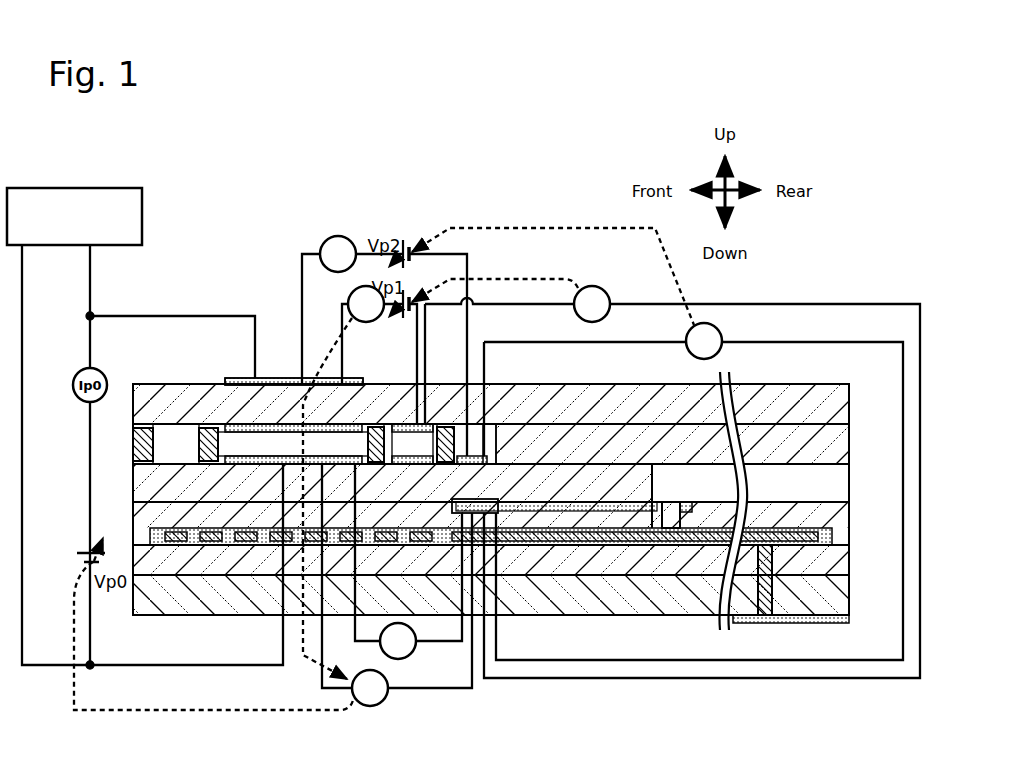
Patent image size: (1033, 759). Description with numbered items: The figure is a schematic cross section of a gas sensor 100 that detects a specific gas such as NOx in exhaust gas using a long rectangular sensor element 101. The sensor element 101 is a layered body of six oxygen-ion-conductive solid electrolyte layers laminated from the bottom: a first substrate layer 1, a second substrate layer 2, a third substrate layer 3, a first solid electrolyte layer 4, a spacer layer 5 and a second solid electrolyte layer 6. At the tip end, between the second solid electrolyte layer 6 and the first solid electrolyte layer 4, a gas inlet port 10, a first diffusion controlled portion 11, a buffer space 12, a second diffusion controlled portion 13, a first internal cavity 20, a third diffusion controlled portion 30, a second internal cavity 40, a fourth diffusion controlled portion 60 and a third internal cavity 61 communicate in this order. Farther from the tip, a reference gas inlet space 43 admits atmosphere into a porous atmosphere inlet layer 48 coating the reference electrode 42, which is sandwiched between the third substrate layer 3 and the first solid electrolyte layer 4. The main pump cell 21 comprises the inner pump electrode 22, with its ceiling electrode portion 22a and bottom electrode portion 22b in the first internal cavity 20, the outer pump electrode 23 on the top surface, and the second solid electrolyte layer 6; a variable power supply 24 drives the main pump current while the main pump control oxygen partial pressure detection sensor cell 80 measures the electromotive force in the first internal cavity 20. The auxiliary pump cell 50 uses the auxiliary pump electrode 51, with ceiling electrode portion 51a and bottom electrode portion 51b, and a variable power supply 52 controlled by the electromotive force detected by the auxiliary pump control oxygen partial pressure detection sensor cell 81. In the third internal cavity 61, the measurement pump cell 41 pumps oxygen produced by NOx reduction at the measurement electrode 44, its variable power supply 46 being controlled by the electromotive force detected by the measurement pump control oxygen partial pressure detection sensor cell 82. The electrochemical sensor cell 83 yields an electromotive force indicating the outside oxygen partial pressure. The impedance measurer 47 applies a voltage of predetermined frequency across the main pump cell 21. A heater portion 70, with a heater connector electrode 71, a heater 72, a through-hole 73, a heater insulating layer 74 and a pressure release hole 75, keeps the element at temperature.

The first substrate layer 1 is at (851, 595).
The second substrate layer 2 is at (851, 565).
The third substrate layer 3 is at (136, 519).
The first solid electrolyte layer 4 is at (136, 482).
The spacer layer 5 is at (851, 432).
The second solid electrolyte layer 6 is at (851, 405).
The gas inlet port 10 is at (133, 428).
The first diffusion controlled portion 11 is at (143, 428).
The buffer space 12 is at (163, 440).
The second diffusion controlled portion 13 is at (208, 428).
The first internal cavity 20 is at (330, 440).
The main pump cell 21 is at (172, 313).
The inner pump electrode 22 is at (283, 378).
The ceiling electrode portion 22a is at (318, 424).
The bottom electrode portion 22b is at (280, 458).
The outer pump electrode 23 is at (241, 378).
The variable power supply 24 is at (78, 558).
The third diffusion controlled portion 30 is at (379, 430).
The second internal cavity 40 is at (394, 420).
The measurement pump cell 41 is at (333, 237).
The reference electrode 42 is at (497, 500).
The reference gas inlet space 43 is at (844, 494).
The measurement electrode 44 is at (475, 464).
The variable power supply 46 is at (405, 243).
The impedance measurer 47 is at (145, 218).
The atmosphere inlet layer 48 is at (655, 500).
The auxiliary pump cell 50 is at (349, 296).
The auxiliary pump electrode 51 is at (395, 445).
The ceiling electrode portion 51a is at (421, 424).
The bottom electrode portion 51b is at (410, 464).
The variable power supply 52 is at (407, 315).
The fourth diffusion controlled portion 60 is at (447, 428).
The third internal cavity 61 is at (488, 447).
The heater portion 70 is at (562, 548).
The heater connector electrode 71 is at (853, 620).
The heater 72 is at (240, 546).
The through-hole 73 is at (775, 612).
The heater insulating layer 74 is at (160, 546).
The pressure release hole 75 is at (672, 502).
The main pump control oxygen partial pressure detection sensor cell 80 is at (394, 700).
The auxiliary pump control oxygen partial pressure detection sensor cell 81 is at (761, 301).
The measurement pump control oxygen partial pressure detection sensor cell 82 is at (767, 341).
The electrochemical sensor cell 83 is at (420, 650).
The gas sensor 100 is at (832, 178).
The sensor element 101 is at (154, 351).